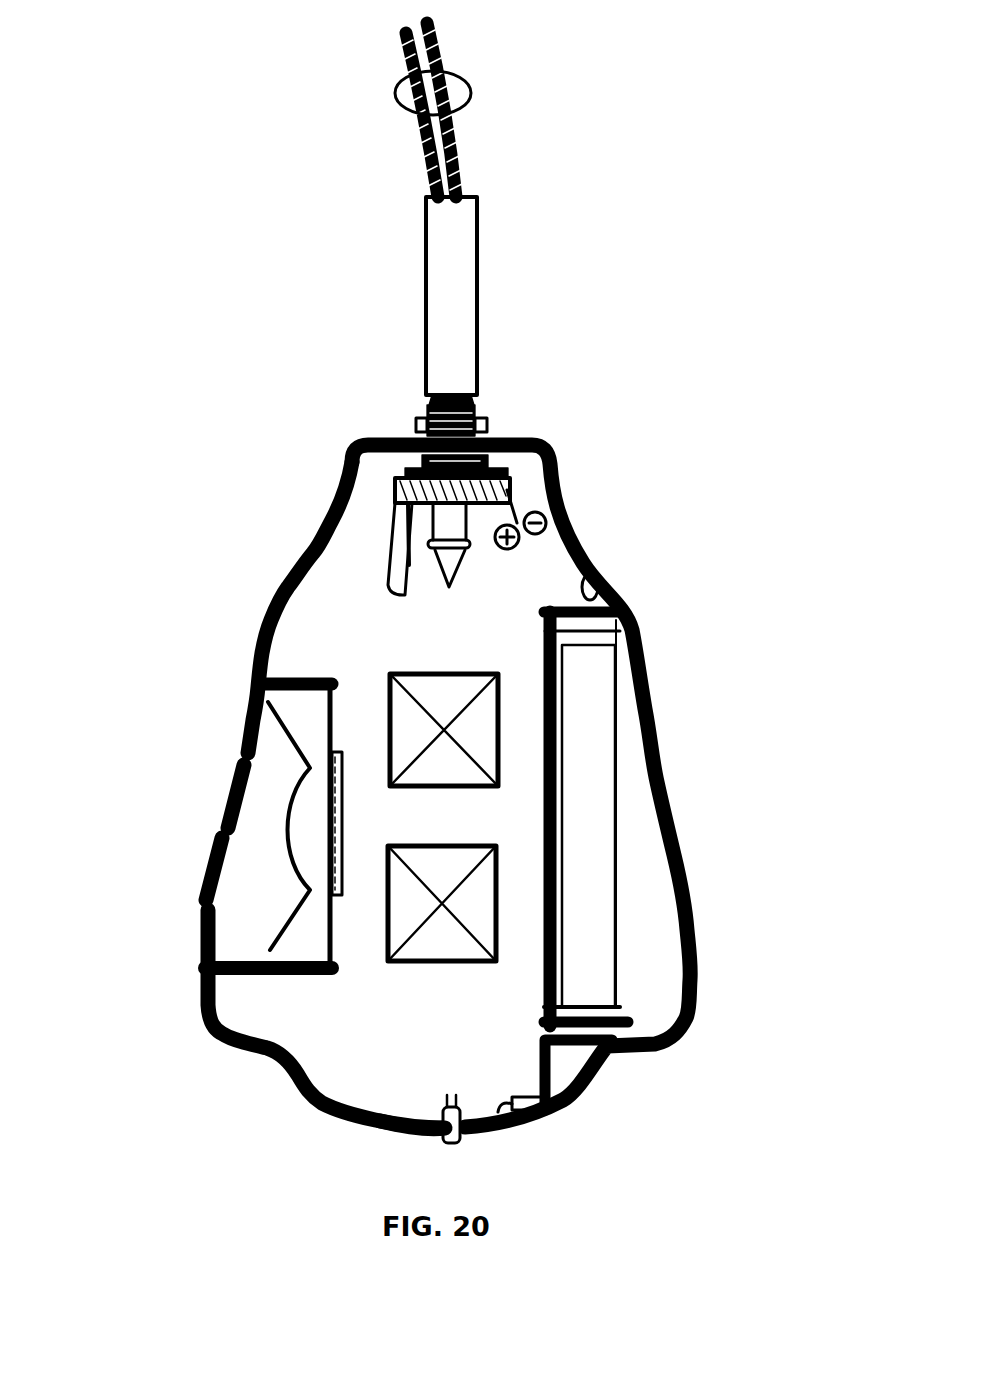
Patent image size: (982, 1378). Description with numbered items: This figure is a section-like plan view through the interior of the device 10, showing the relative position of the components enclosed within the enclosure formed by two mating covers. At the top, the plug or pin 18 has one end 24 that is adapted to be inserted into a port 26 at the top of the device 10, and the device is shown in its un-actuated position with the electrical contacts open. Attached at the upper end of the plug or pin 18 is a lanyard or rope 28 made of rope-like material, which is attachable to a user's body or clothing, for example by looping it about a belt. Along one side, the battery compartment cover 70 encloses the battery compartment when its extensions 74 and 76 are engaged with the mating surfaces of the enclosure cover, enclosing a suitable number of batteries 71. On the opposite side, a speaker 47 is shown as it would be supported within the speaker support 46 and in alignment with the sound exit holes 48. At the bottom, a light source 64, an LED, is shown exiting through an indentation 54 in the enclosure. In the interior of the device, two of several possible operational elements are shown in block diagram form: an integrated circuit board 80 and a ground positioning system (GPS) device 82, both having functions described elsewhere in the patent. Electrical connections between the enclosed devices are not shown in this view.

The device 10 is at (288, 550).
The plug or pin 18 is at (480, 276).
The end of plug or pin 24 is at (417, 553).
The port 26 is at (510, 419).
The lanyard or rope 28 is at (474, 84).
The speaker support 46 is at (295, 672).
The speaker 47 is at (308, 733).
The sound exit holes 48 is at (227, 760).
The indentation 54 is at (438, 1140).
The light source 64 is at (452, 1148).
The battery compartment cover 70 is at (672, 782).
The batteries 71 is at (598, 735).
The extension 74 is at (500, 1125).
The extension 76 is at (600, 567).
The integrated circuit board 80 is at (437, 700).
The ground positioning system (GPS) device 82 is at (440, 920).